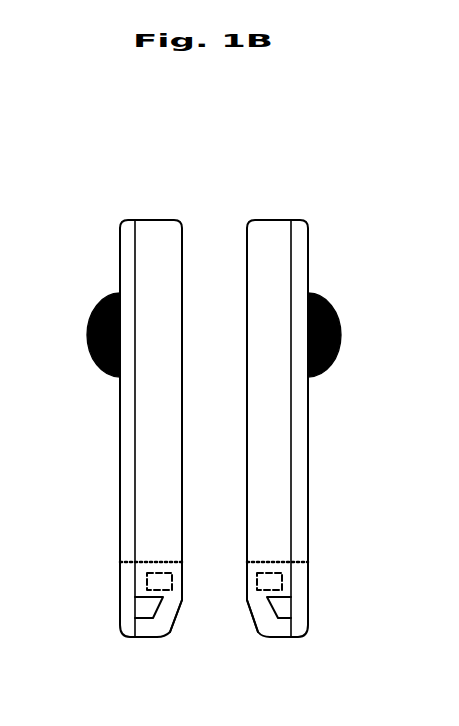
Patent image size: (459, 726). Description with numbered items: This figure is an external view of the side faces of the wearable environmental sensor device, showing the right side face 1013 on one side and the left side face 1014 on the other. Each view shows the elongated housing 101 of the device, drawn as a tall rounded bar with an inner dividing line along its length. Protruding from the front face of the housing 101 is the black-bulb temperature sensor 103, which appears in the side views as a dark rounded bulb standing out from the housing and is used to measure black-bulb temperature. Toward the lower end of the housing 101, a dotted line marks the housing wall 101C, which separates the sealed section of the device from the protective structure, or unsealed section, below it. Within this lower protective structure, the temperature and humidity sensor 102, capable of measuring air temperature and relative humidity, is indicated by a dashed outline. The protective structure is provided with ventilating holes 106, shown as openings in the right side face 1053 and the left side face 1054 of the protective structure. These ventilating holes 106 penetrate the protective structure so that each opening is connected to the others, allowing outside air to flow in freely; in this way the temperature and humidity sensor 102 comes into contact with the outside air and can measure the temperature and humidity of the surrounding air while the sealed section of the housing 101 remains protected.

The housing 101 is at (214, 373).
The right side face 1013 is at (142, 169).
The left side face 1014 is at (273, 167).
The black-bulb temperature sensor 103 is at (87, 325).
The housing wall 101C is at (259, 573).
The right side face of the protective structure 1053 is at (147, 590).
The left side face of the protective structure 1054 is at (285, 591).
The temperature and humidity sensor 102 is at (251, 605).
The ventilating holes 106 is at (278, 619).